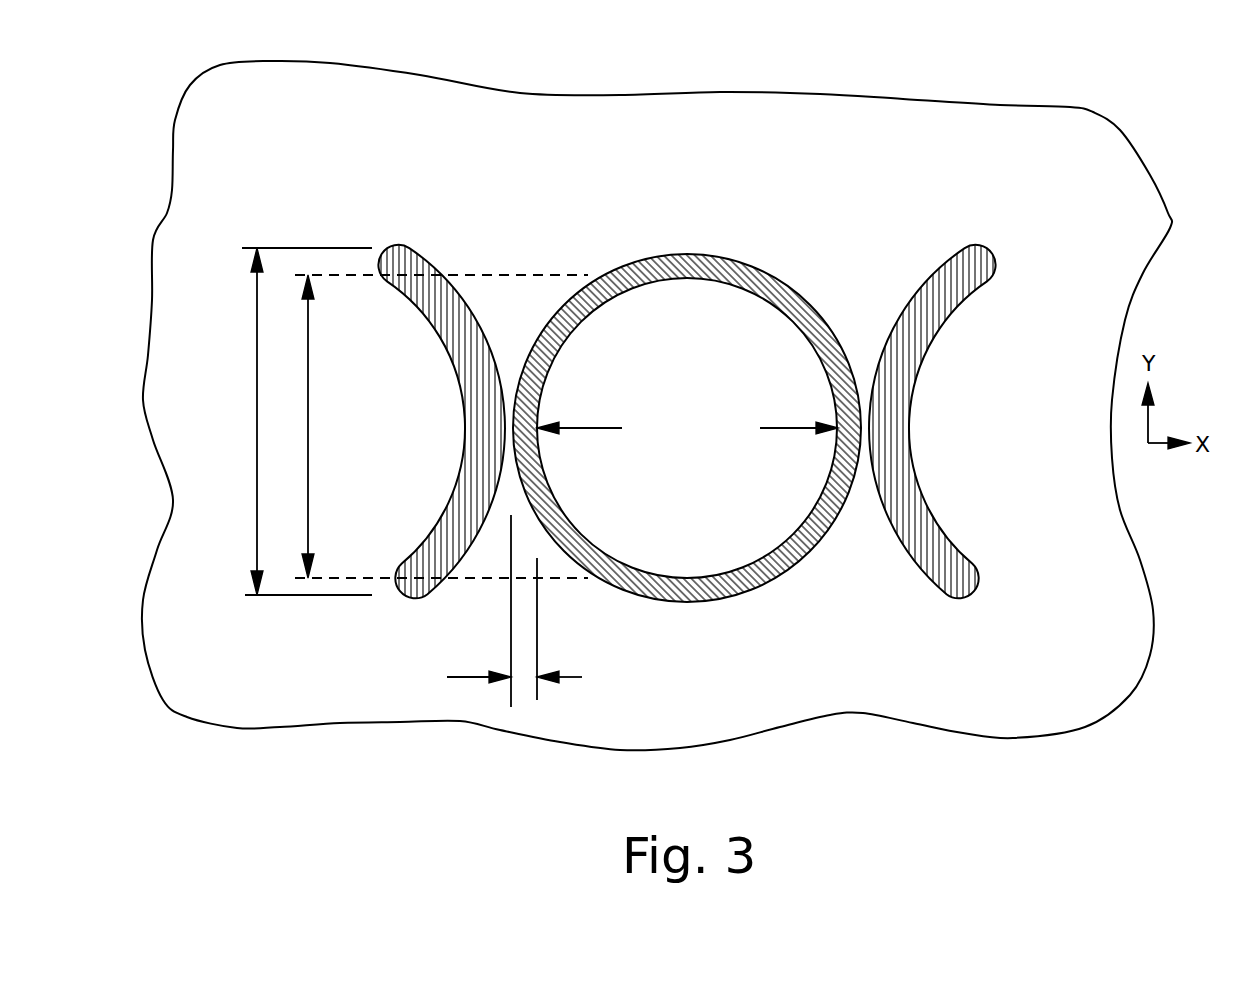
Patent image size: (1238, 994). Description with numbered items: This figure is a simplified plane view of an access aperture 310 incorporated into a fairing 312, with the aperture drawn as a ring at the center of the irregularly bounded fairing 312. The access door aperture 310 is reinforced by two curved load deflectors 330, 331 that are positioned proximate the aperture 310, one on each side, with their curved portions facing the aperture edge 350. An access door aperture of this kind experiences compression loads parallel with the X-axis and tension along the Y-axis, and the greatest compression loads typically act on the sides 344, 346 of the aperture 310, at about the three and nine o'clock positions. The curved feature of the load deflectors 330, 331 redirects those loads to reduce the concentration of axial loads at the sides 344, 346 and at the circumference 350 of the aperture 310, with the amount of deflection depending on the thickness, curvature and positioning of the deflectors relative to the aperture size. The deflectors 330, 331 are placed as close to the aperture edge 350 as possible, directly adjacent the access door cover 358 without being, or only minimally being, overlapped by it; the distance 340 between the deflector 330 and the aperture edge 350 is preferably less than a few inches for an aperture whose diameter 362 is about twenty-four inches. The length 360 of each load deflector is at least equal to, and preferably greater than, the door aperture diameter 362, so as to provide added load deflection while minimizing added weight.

The fairing 312 is at (903, 97).
The access aperture 310 is at (765, 520).
The curved load deflector 330 is at (418, 253).
The curved load deflector 331 is at (992, 253).
The distance 340 is at (520, 665).
The side of the aperture 344 is at (780, 423).
The side of the aperture 346 is at (583, 428).
The aperture edge 350 is at (780, 320).
The access door cover 358 is at (693, 593).
The length of the load deflectors 360 is at (256, 432).
The diameter of the door aperture 362 is at (310, 436).